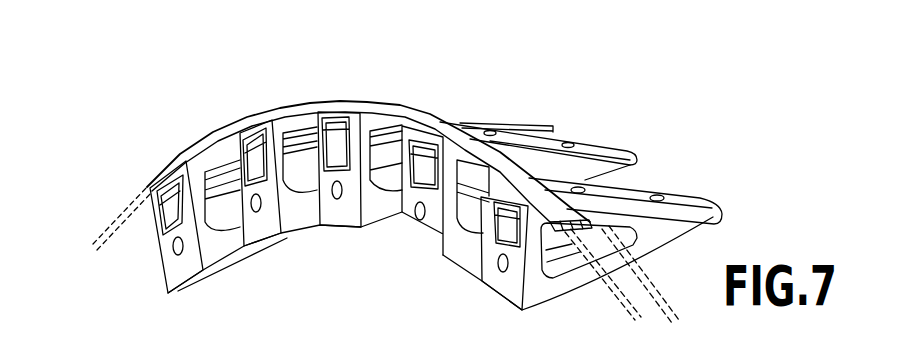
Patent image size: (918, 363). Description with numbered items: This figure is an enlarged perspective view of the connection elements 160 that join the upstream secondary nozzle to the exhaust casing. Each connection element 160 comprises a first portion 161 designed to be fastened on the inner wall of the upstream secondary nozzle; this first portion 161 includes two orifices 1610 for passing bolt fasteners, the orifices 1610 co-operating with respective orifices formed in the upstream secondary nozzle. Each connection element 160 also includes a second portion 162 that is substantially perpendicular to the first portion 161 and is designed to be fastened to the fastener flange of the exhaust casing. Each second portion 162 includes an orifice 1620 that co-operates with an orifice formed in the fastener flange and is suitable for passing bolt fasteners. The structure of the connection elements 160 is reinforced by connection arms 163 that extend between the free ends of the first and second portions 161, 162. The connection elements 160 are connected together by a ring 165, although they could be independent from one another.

The ring 165 is at (366, 104).
The second portion 162 is at (422, 234).
The orifice 1620 is at (416, 214).
The connection element 160 is at (607, 132).
The first portion 161 is at (593, 138).
The orifices 1610 is at (568, 141).
The connection arm 163 is at (551, 244).